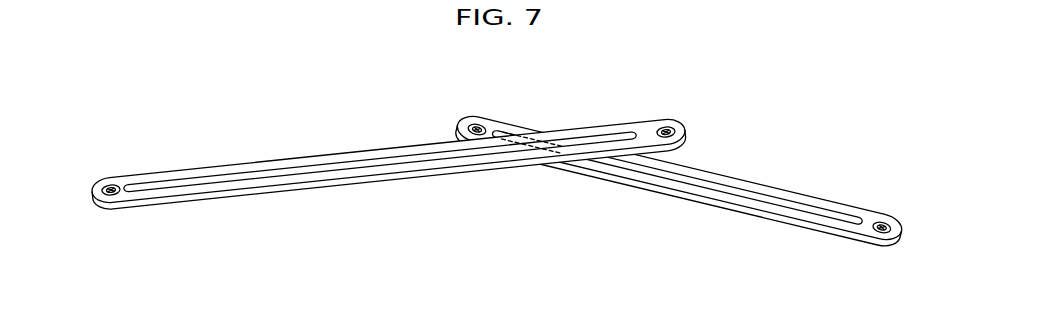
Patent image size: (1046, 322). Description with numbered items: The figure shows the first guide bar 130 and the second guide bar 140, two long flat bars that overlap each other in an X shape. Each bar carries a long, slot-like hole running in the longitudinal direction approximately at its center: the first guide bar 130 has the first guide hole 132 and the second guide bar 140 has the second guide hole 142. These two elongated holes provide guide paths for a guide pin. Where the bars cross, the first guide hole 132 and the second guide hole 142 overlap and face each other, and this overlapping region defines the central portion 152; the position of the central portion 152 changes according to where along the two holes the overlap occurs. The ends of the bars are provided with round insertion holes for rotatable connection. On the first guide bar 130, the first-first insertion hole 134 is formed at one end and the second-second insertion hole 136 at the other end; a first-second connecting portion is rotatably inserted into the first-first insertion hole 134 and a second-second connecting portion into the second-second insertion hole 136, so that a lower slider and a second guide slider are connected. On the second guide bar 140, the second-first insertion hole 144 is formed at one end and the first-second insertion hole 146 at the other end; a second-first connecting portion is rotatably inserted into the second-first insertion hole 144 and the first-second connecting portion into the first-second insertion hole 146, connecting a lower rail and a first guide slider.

The first guide bar 130 is at (382, 152).
The first guide hole 132 is at (287, 169).
The first-first insertion hole 134 is at (112, 186).
The second-second insertion hole 136 is at (666, 127).
The second guide bar 140 is at (830, 201).
The second guide hole 142 is at (762, 195).
The second-first insertion hole 144 is at (881, 222).
The first-second insertion hole 146 is at (477, 123).
The central portion 152 is at (543, 140).